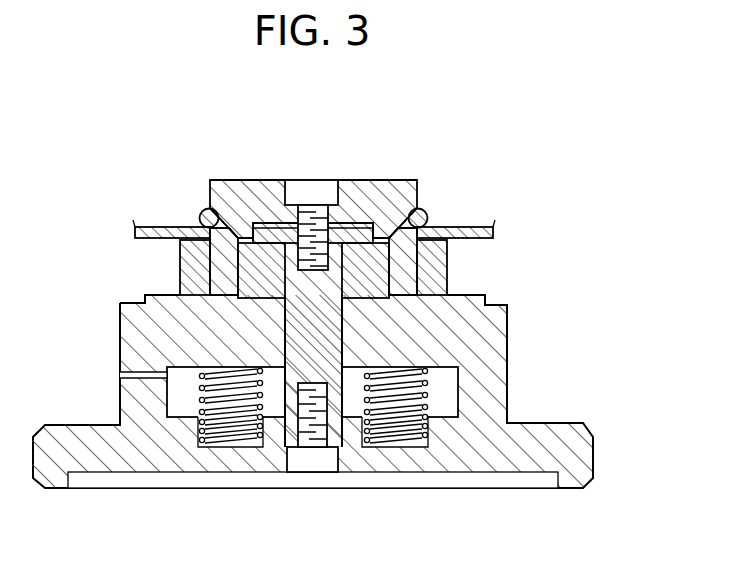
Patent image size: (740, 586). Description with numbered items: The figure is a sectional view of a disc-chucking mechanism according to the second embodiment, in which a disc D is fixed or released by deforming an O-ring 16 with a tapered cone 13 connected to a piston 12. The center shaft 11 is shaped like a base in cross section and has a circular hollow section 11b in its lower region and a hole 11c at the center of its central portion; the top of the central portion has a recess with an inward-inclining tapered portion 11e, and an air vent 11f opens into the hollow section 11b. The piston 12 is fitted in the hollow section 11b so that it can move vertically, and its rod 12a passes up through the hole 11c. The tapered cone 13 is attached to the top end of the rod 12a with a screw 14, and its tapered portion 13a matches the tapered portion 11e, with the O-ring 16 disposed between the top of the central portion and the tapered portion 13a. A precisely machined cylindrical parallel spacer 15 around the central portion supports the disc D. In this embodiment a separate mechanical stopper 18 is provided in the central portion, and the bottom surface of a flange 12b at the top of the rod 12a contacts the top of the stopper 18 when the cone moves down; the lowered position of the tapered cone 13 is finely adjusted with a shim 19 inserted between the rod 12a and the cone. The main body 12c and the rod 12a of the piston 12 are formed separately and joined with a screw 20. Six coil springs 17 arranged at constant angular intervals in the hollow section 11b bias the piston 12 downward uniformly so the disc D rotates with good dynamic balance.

The center shaft 11 is at (488, 393).
The hollow section 11b is at (440, 440).
The hole 11c is at (345, 330).
The tapered portion 11e is at (397, 257).
The air vent 11f is at (145, 380).
The piston 12 is at (191, 476).
The rod 12a is at (270, 330).
The flange 12b is at (358, 232).
The main body 12c is at (350, 453).
The tapered cone 13 is at (265, 200).
The tapered portion 13a is at (394, 240).
The screw 14 is at (308, 222).
The parallel spacer 15 is at (190, 252).
The O-ring 16 is at (428, 218).
The coil spring 17 is at (242, 455).
The mechanical stopper 18 is at (247, 273).
The shim 19 is at (232, 188).
The screw 20 is at (297, 443).
The disc D is at (162, 226).